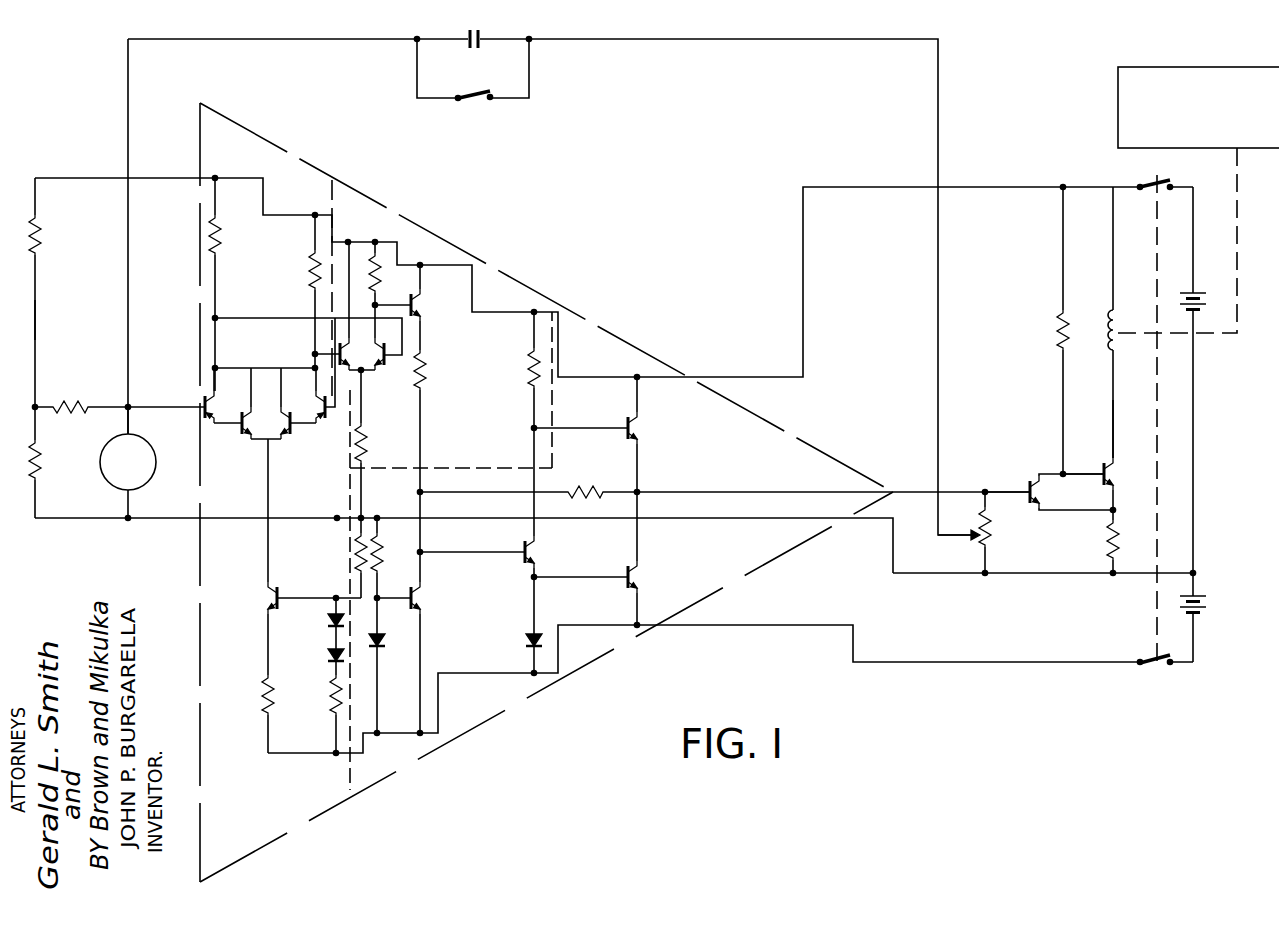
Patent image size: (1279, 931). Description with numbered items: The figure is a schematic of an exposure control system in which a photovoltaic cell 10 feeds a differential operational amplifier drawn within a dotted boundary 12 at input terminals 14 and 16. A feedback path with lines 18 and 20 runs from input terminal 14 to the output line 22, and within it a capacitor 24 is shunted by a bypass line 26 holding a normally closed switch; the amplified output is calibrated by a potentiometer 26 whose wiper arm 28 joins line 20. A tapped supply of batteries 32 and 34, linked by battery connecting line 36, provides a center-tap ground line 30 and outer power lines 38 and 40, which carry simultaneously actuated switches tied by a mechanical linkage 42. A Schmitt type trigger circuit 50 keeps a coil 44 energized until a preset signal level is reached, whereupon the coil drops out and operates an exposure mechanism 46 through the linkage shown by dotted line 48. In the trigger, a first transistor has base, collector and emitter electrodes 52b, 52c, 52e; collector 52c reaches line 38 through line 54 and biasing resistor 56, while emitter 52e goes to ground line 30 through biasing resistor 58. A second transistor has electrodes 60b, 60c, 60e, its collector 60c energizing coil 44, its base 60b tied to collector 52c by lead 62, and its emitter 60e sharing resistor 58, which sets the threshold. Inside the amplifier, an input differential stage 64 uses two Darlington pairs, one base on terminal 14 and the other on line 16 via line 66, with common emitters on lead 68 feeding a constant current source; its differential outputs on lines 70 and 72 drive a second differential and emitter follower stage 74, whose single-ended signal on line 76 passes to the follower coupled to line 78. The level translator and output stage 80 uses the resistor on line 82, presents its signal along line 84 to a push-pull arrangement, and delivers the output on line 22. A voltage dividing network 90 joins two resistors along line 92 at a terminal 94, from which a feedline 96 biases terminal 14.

The photovoltaic cell 10 is at (152, 478).
The differential amplifier 12 is at (546, 492).
The input terminal 14 is at (118, 374).
The input terminal 16 is at (163, 520).
The feedback path line 18 is at (270, 42).
The feedback path line 20 is at (772, 40).
The output line 22 is at (910, 490).
The capacitor 24 is at (478, 47).
The bypass line / potentiometer 26 is at (723, 306).
The wiper arm 28 is at (952, 537).
The ground line 30 is at (874, 520).
The battery 32 is at (1195, 295).
The battery 34 is at (1208, 603).
The battery connecting line 36 is at (1195, 416).
The power supply line 38 is at (614, 262).
The power supply line 40 is at (730, 702).
The mechanical linkage 42 is at (1158, 238).
The coil 44 is at (1115, 318).
The exposure mechanism 46 is at (1230, 65).
The dotted line 48 is at (1240, 262).
The trigger circuit 50 is at (1026, 442).
The base electrode 52b is at (1003, 490).
The collector electrode 52c is at (1037, 467).
The emitter electrode 52e is at (1064, 522).
The line 54 is at (1063, 258).
The biasing resistor 56 is at (1060, 313).
The biasing resistor 58 is at (1108, 548).
The base electrode 60b is at (1080, 472).
The collector electrode 60c is at (1113, 455).
The emitter electrode 60e is at (1114, 507).
The lead 62 is at (1070, 484).
The input differential amplifier stage 64 is at (330, 199).
The line 66 is at (348, 467).
The lead 68 is at (270, 497).
The output line 70 is at (313, 350).
The output line 72 is at (337, 317).
The second differential amplifier and emitter follower stage 74 is at (556, 320).
The line 76 is at (398, 302).
The line 78 is at (656, 494).
The level translator and output stage 80 is at (683, 360).
The line 82 is at (435, 466).
The line 84 is at (455, 551).
The voltage dividing network 90 is at (56, 316).
The line 92 is at (38, 320).
The terminal 94 is at (37, 400).
The feedline 96 is at (104, 405).